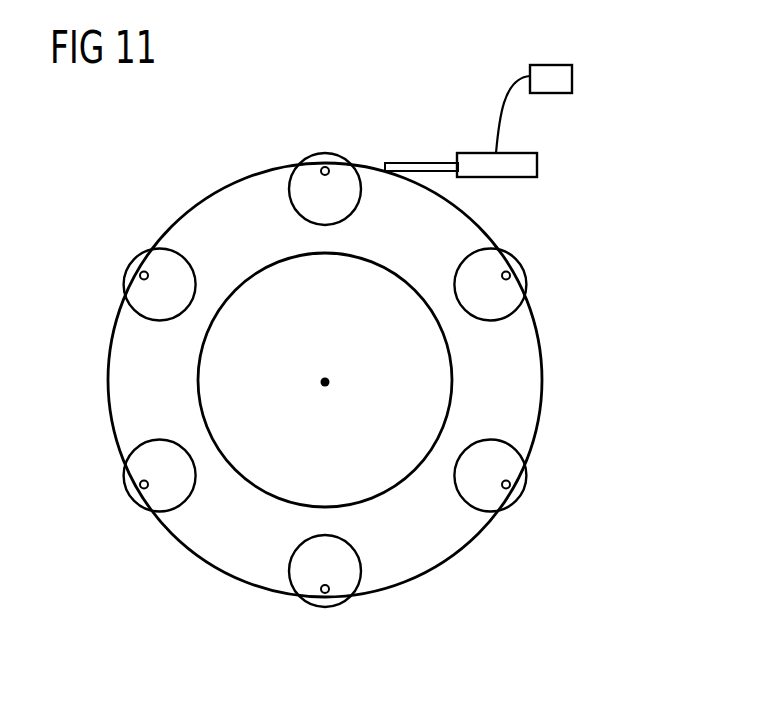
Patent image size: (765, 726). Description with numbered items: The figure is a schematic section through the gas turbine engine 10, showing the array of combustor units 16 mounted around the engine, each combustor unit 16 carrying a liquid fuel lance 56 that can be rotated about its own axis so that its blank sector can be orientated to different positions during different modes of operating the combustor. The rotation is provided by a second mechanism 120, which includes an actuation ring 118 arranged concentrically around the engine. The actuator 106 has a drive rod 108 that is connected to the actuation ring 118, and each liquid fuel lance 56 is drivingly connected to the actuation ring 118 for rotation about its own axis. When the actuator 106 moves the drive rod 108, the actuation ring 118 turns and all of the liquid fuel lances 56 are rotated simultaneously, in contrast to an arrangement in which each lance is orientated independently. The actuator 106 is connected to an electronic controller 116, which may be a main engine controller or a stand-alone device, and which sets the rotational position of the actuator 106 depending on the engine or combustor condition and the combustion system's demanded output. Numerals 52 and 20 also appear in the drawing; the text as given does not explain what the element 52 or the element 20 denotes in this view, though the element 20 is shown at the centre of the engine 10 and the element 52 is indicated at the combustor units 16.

The gas turbine engine 10 is at (142, 157).
The actuation ring 118 is at (267, 170).
The combustor units 16 is at (519, 505).
The roller surface 52 is at (122, 480).
The liquid fuel lance 56 is at (512, 273).
The central axis 20 is at (331, 382).
The drive rod 108 is at (420, 167).
The actuator 106 is at (524, 165).
The electronic controller 116 is at (572, 78).
The second mechanism 120 is at (458, 123).